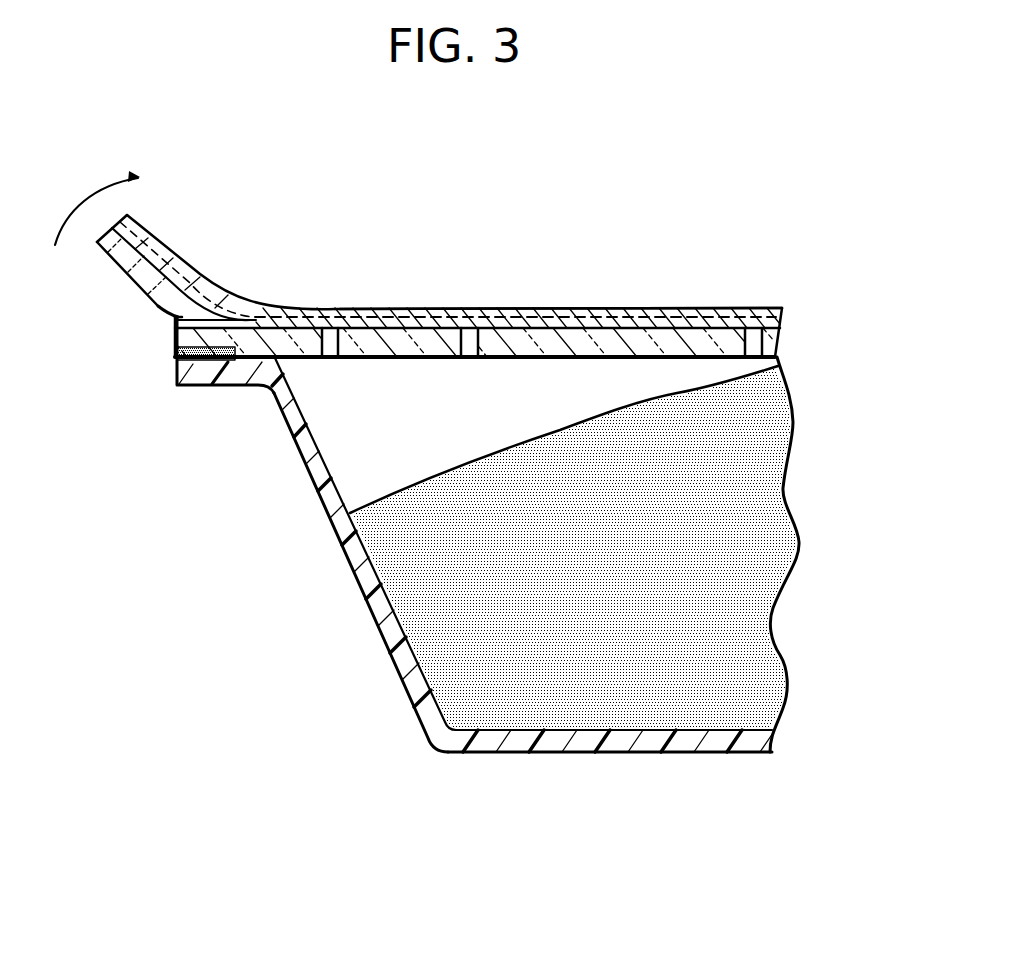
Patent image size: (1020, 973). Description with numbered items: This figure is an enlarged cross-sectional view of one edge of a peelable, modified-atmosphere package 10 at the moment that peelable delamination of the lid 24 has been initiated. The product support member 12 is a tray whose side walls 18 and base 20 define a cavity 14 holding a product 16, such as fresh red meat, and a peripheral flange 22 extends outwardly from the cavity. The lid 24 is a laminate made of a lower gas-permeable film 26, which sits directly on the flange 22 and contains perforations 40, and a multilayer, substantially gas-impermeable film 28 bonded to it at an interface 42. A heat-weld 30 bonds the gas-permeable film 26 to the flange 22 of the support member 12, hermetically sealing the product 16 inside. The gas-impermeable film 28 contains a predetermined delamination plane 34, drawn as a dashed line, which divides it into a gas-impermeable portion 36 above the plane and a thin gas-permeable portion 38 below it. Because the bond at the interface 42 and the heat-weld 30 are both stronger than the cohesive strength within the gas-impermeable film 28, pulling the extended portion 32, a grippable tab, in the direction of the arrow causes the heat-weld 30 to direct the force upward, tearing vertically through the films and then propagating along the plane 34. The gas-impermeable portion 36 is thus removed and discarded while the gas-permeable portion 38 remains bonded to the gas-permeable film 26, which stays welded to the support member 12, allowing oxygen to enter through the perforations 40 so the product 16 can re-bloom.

The package 10 is at (484, 199).
The product support member 12 is at (383, 652).
The cavity 14 is at (390, 432).
The product 16 is at (617, 572).
The side walls 18 is at (325, 510).
The base 20 is at (602, 753).
The peripheral flange 22 is at (223, 387).
The lid 24 is at (502, 307).
The gas-permeable film 26 is at (722, 322).
The gas-impermeable film 28 is at (667, 307).
The heat-weld 30 is at (180, 367).
The extended portion 32 is at (143, 220).
The predetermined plane 34 is at (320, 306).
The gas-impermeable portion 36 is at (173, 318).
The gas-permeable portion 38 is at (180, 317).
The perforations 40 is at (765, 347).
The interface 42 is at (580, 323).